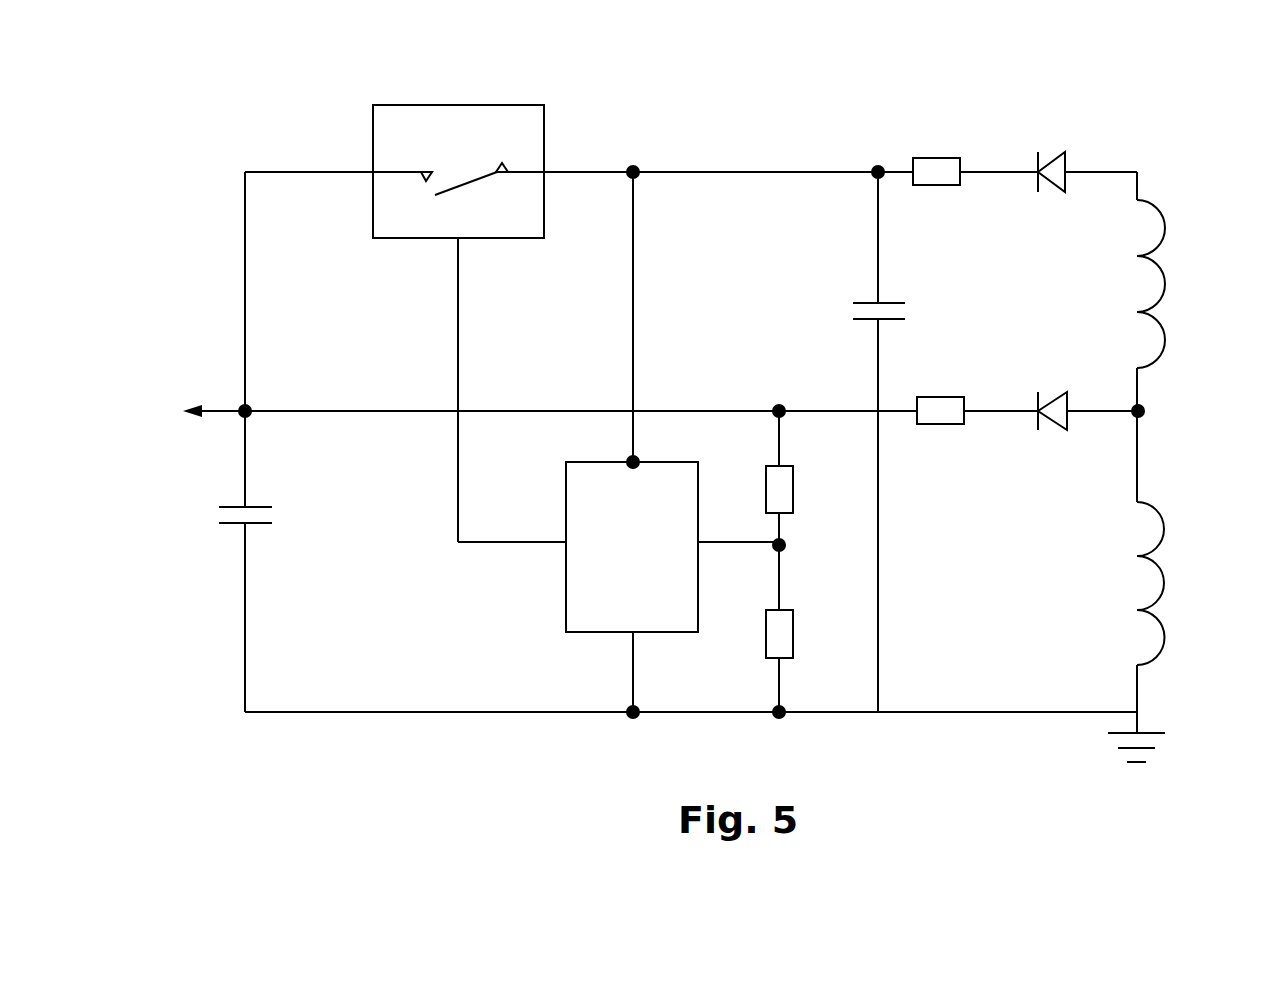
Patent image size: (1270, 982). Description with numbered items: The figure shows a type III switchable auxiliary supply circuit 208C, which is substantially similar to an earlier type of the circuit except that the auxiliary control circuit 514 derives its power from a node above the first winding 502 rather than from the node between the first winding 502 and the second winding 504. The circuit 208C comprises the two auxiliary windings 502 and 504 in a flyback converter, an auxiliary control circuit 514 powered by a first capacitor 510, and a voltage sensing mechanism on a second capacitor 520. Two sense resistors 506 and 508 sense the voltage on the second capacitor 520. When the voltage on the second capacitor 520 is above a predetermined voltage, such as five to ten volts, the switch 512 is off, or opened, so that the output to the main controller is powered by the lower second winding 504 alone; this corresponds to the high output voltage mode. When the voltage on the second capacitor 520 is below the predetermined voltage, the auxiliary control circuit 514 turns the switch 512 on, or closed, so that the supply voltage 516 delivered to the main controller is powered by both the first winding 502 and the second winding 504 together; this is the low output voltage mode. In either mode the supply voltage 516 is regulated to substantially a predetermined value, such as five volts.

The type III switchable auxiliary supply circuit 208C is at (1219, 68).
The first winding W1 502 is at (1188, 286).
The second winding W2 504 is at (1188, 568).
The resistor R3 506 is at (808, 474).
The resistor R4 508 is at (808, 619).
The capacitor C1 510 is at (945, 296).
The switch Q1 512 is at (566, 130).
The auxiliary control circuit 514 is at (546, 603).
The Vcc 516 is at (170, 388).
The capacitor C2 520 is at (294, 510).